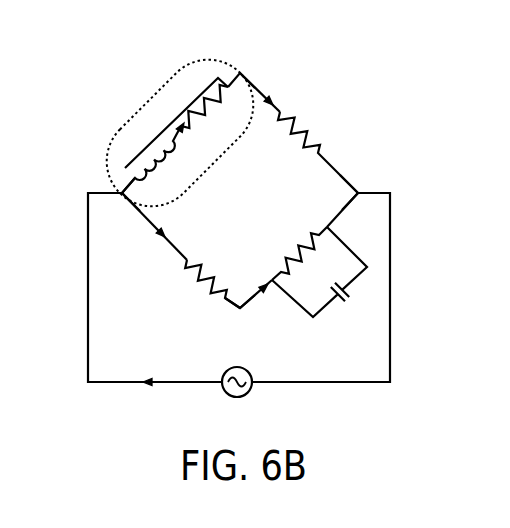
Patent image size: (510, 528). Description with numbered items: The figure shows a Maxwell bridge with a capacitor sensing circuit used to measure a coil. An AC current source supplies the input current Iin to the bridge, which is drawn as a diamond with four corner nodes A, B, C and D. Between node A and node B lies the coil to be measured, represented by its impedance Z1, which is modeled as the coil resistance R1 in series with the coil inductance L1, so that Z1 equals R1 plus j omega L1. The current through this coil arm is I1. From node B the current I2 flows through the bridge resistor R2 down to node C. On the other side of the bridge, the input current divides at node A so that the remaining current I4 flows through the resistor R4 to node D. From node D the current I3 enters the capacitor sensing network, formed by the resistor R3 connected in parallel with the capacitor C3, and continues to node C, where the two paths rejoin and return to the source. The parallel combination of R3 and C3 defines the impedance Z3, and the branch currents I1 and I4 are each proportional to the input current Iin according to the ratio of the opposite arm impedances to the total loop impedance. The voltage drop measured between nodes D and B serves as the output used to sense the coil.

The bridge node A is at (104, 194).
The bridge node B is at (241, 67).
The bridge node C is at (374, 192).
The bridge node D is at (240, 317).
The coil impedance Z1 is at (152, 133).
The coil inductance L1 is at (151, 163).
The coil resistance R1 is at (211, 112).
The coil branch current I1 is at (190, 142).
The R2 branch current I2 is at (262, 92).
The bridge resistor R2 is at (318, 152).
The R3/C3 branch current I3 is at (260, 300).
The bridge resistor R3 is at (309, 236).
The sensing capacitor C3 is at (321, 278).
The R4 branch current I4 is at (154, 226).
The bridge resistor R4 is at (213, 284).
The input AC current Iin is at (197, 395).